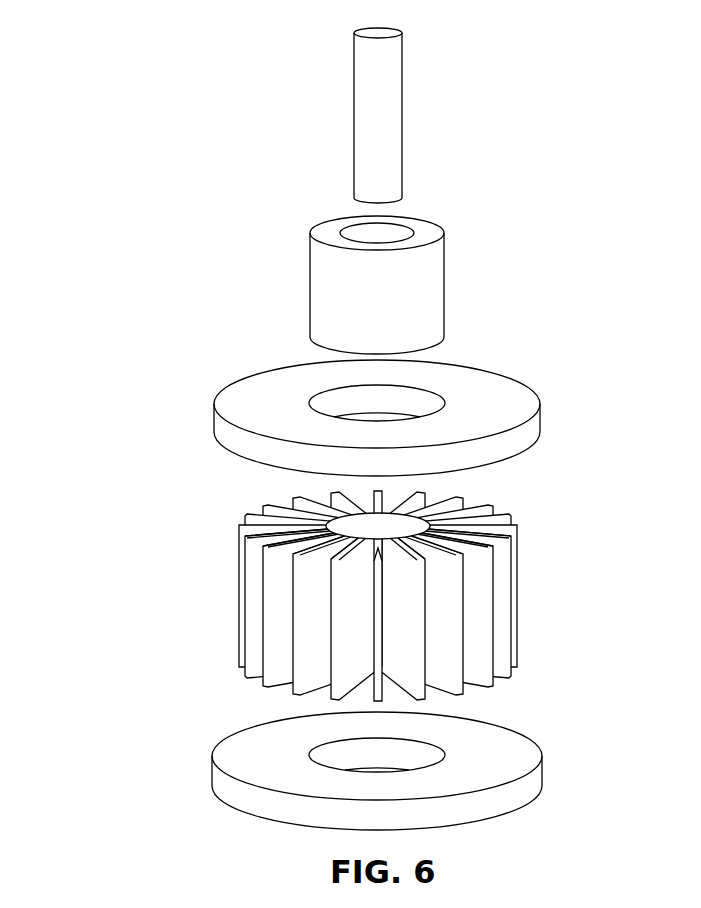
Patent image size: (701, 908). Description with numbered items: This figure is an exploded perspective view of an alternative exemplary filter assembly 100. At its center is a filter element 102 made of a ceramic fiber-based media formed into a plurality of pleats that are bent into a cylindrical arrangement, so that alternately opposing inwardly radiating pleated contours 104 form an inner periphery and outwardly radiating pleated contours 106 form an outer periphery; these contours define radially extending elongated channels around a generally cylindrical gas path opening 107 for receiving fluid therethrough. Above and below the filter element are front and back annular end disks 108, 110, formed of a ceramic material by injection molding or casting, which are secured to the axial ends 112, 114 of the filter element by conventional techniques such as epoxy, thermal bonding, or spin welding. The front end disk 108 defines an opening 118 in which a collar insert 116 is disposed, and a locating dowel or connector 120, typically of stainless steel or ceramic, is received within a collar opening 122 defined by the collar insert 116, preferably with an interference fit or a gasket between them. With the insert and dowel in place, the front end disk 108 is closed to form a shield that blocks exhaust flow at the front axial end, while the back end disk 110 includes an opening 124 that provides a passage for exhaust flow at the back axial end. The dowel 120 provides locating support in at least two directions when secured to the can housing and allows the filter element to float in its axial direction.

The filter assembly 100 is at (340, 580).
The filter element 102 is at (238, 585).
The inwardly radiating pleated contours 104 is at (242, 625).
The outwardly radiating pleated contours 106 is at (252, 670).
The gas path opening 107 is at (357, 521).
The front annular end disk 108 is at (348, 415).
The back annular end disk 110 is at (346, 768).
The axial end 112 is at (506, 499).
The axial end 114 is at (506, 685).
The collar insert 116 is at (432, 265).
The opening 118 is at (415, 402).
The locating dowel 120 is at (380, 118).
The collar opening 122 is at (400, 235).
The opening 124 is at (415, 755).